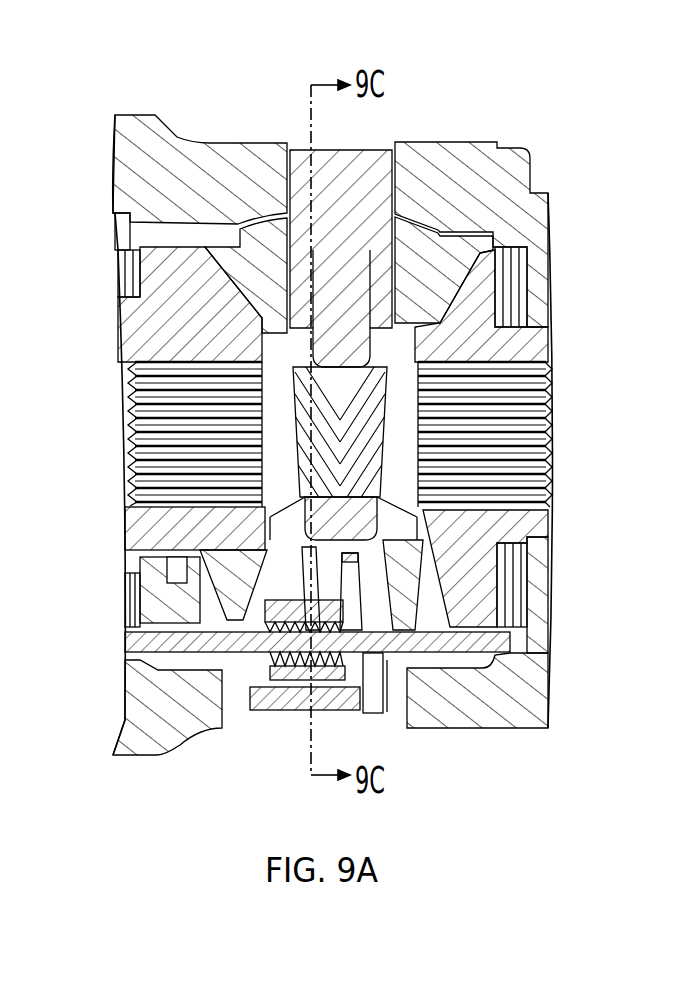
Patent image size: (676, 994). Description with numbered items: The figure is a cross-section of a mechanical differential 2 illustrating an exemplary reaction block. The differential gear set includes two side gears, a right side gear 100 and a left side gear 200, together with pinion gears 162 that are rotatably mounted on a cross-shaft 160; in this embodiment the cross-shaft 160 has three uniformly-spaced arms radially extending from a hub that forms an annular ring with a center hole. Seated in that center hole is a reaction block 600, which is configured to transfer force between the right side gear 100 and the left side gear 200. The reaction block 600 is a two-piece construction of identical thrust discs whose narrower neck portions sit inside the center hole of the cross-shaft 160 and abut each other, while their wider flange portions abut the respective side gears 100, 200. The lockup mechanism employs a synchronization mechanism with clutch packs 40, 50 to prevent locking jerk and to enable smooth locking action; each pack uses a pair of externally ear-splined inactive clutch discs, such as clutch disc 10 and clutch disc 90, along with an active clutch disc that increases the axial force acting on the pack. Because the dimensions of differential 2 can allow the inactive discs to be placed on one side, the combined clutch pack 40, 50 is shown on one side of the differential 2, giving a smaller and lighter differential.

The differential 2 is at (502, 91).
The externally ear-splined clutch disc 10 is at (527, 247).
The externally ear-splined clutch disc 90 is at (503, 245).
The cross-shaft 160 is at (363, 200).
The left side gear 200 is at (133, 345).
The right side gear 100 is at (541, 347).
The pinion gear 162 is at (288, 565).
The reaction block 600 is at (376, 478).
The clutch pack 40 is at (545, 746).
The clutch pack 50 is at (337, 698).